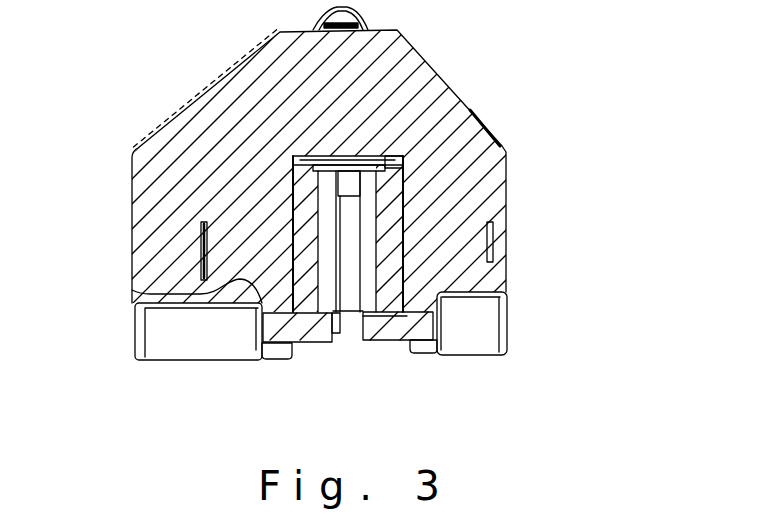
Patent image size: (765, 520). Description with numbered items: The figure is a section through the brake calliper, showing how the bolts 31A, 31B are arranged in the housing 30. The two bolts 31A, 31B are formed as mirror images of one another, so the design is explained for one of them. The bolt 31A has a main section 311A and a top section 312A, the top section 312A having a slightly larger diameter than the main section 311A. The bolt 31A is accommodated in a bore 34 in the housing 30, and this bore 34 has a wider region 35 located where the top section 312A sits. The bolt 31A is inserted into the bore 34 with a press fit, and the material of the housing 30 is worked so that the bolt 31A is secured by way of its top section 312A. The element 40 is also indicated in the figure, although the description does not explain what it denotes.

The housing 30 is at (427, 93).
The guide column 40 is at (305, 197).
The wider region 35 is at (133, 287).
The bore 34 is at (431, 296).
The top section 312A is at (437, 317).
The bolt 31B is at (312, 333).
The bolt 31A is at (373, 340).
The main section 311A is at (395, 340).